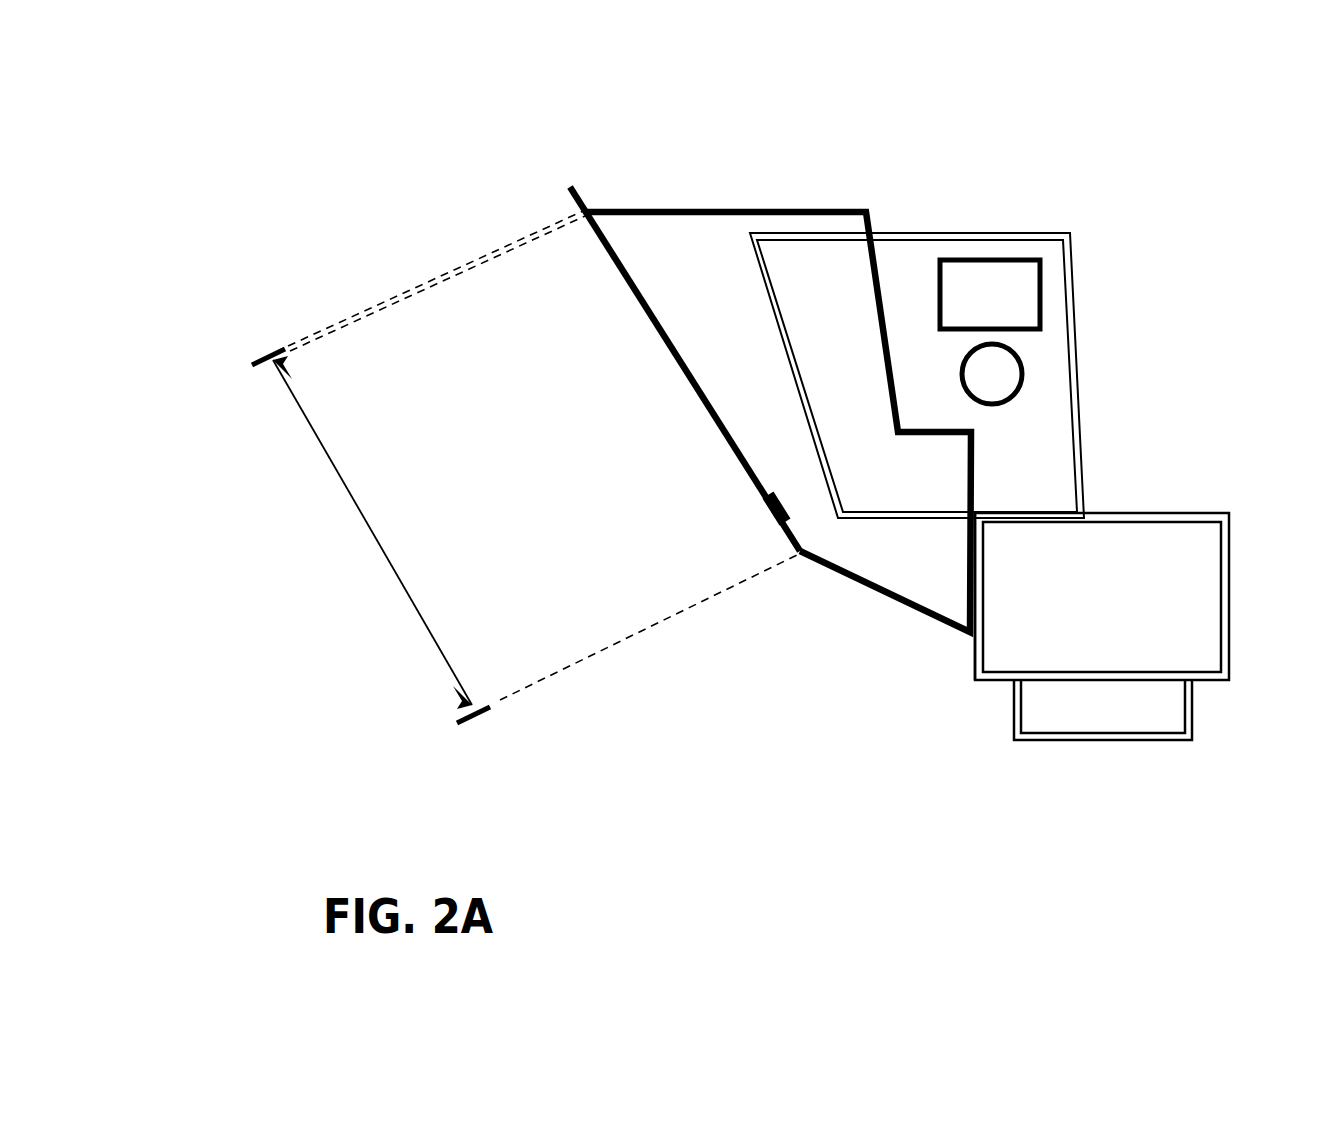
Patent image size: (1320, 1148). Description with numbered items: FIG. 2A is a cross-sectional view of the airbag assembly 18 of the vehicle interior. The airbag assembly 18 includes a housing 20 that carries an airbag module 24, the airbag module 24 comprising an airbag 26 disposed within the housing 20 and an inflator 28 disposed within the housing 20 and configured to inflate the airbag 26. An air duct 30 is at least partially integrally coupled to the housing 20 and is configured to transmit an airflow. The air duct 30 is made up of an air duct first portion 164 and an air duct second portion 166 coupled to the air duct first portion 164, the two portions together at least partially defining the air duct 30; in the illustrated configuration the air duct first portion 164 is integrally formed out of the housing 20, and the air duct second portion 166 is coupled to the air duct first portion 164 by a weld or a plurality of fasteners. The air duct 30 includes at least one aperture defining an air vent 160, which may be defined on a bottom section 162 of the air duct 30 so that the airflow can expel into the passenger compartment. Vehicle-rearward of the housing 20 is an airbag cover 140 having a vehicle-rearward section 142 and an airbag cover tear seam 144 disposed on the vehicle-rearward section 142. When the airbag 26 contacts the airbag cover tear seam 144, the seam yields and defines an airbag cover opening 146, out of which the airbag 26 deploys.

The airbag assembly 18 is at (903, 152).
The housing 20 is at (1073, 250).
The airbag module 24 is at (1032, 348).
The airbag 26 is at (1043, 290).
The inflator 28 is at (1025, 373).
The air duct 30 is at (1118, 512).
The airbag cover 140 is at (657, 209).
The vehicle-rearward section 142 is at (430, 281).
The airbag cover tear seam 144 is at (766, 518).
The airbag cover opening 146 is at (386, 556).
The air vent 160 is at (1013, 718).
The bottom section 162 is at (1142, 742).
The air duct first portion 164 is at (975, 655).
The air duct second portion 166 is at (1230, 591).